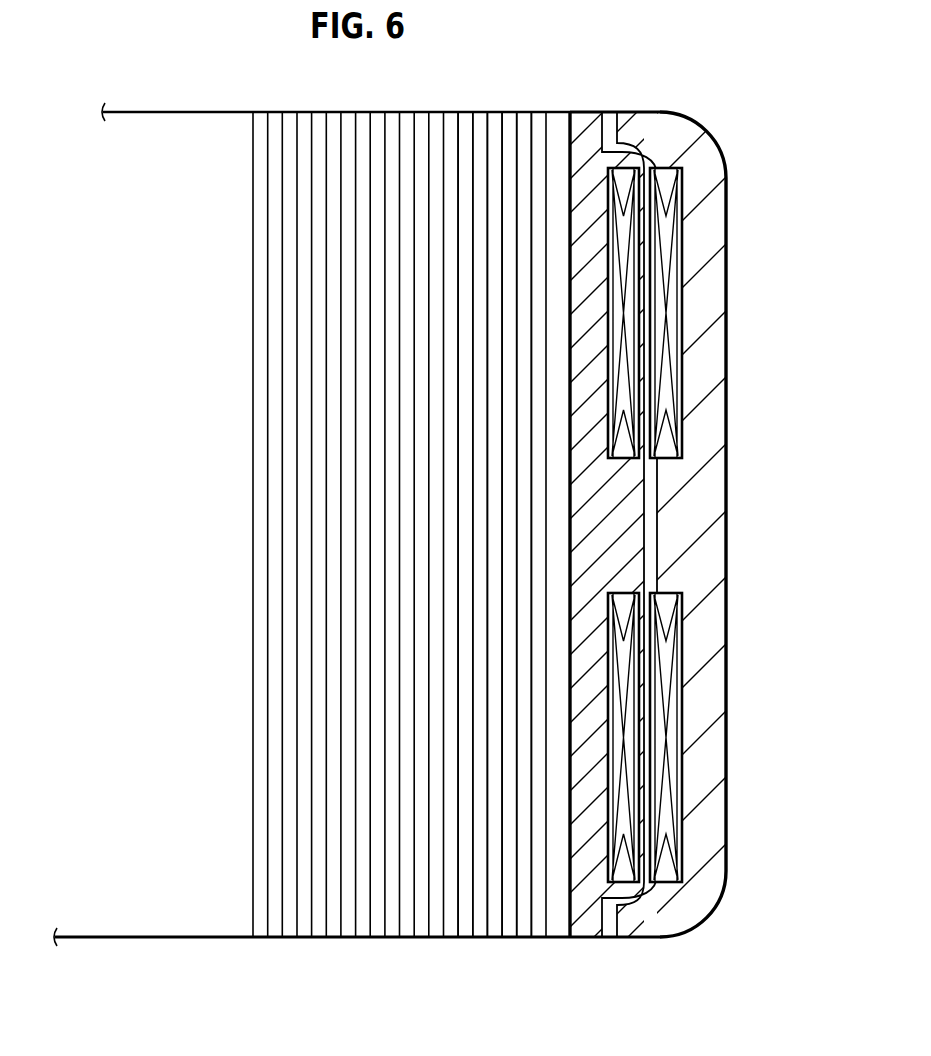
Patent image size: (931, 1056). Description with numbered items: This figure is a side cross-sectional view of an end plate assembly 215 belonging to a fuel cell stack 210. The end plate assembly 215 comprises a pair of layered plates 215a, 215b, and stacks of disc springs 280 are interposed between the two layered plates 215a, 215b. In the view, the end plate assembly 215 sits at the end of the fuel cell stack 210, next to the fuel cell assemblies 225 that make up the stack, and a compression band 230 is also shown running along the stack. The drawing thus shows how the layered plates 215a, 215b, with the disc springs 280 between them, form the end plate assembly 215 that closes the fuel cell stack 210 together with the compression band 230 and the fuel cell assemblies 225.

The fuel cell stack 210 is at (264, 88).
The end plate assembly 215 is at (465, 490).
The layered plate 215a is at (626, 517).
The layered plate 215b is at (708, 362).
The fuel cell assemblies 225 is at (450, 923).
The compression band 230 is at (240, 939).
The disc springs 280 is at (640, 300).